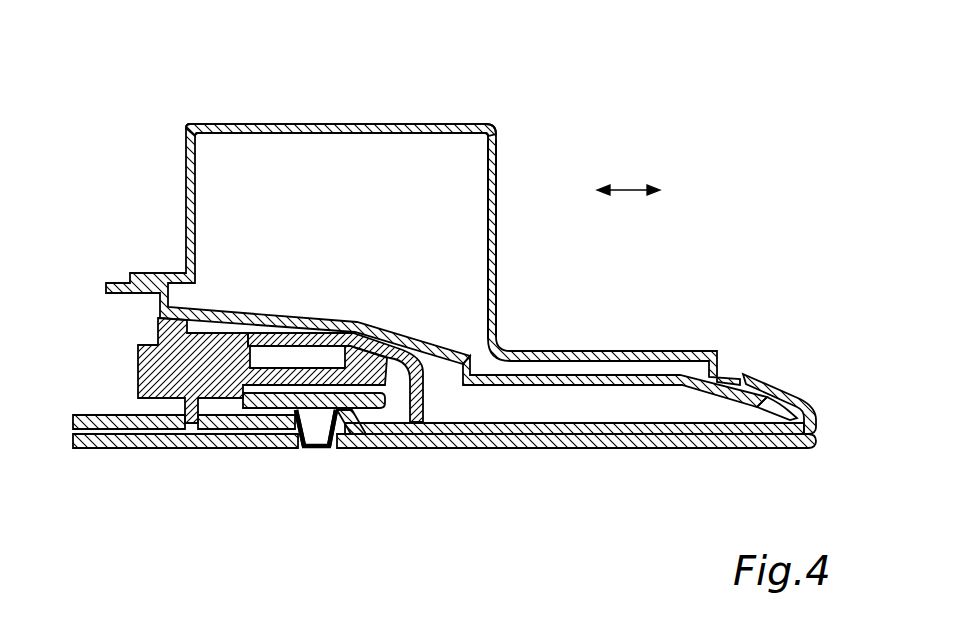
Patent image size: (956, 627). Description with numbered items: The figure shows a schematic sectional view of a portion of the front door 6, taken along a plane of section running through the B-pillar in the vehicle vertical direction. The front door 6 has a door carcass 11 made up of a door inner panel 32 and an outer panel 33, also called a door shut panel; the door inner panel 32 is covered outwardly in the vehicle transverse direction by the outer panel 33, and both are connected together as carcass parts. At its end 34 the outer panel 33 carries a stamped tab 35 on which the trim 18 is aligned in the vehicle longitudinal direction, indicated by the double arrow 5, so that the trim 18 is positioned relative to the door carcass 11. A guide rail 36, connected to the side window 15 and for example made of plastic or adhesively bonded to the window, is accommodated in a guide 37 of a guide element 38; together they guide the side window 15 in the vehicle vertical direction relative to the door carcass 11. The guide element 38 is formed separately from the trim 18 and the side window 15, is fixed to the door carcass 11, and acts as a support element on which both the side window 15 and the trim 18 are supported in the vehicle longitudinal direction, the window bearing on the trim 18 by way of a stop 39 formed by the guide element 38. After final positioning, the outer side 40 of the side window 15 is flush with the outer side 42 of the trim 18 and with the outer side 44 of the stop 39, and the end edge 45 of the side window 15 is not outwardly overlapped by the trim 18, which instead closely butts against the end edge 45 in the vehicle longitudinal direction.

The double arrow 5 is at (627, 188).
The front door 6 is at (484, 108).
The door carcass 11 is at (514, 152).
The side window 15 is at (202, 444).
The trim 18 is at (633, 440).
The door inner panel 32 is at (357, 130).
The outer panel 33 is at (577, 380).
The end of the outer panel 34 is at (770, 364).
The stamped tab 35 is at (765, 407).
The guide rail 36 is at (373, 406).
The guide 37 is at (353, 366).
The guide element 38 is at (208, 360).
The stop 39 is at (320, 448).
The outer side of the side window 40 is at (137, 450).
The outer side of the trim 42 is at (520, 447).
The outer side of the stop 44 is at (332, 447).
The end edge 45 is at (303, 455).